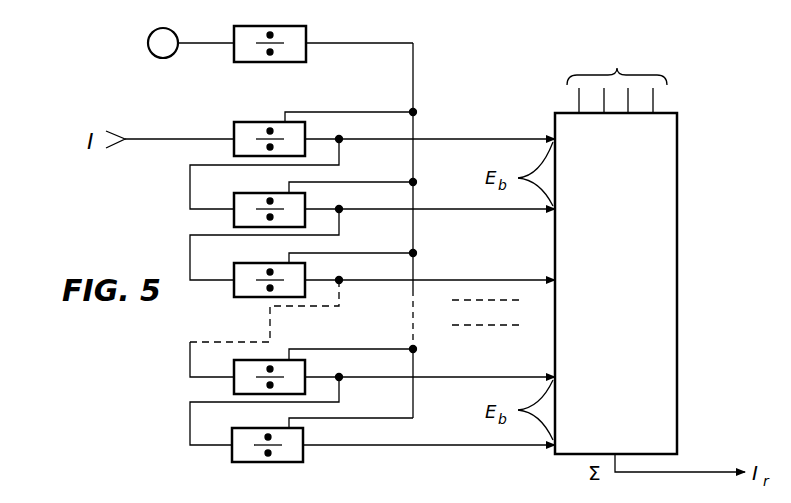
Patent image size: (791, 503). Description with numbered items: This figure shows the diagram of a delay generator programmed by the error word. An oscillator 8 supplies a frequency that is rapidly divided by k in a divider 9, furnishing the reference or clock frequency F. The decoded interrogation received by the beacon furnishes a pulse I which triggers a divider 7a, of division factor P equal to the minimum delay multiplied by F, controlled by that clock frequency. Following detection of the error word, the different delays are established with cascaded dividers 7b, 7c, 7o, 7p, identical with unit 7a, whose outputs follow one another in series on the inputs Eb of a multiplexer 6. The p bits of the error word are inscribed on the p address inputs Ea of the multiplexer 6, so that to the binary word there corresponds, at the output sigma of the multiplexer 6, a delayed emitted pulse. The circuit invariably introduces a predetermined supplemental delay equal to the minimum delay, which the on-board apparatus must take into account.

The oscillator 8 is at (148, 38).
The divider 9 is at (306, 57).
The divider 7a is at (259, 121).
The cascaded divider 7b is at (232, 193).
The cascaded divider 7c is at (232, 265).
The cascaded divider 7o is at (282, 360).
The cascaded divider 7p is at (260, 462).
The multiplexer 6 is at (677, 305).